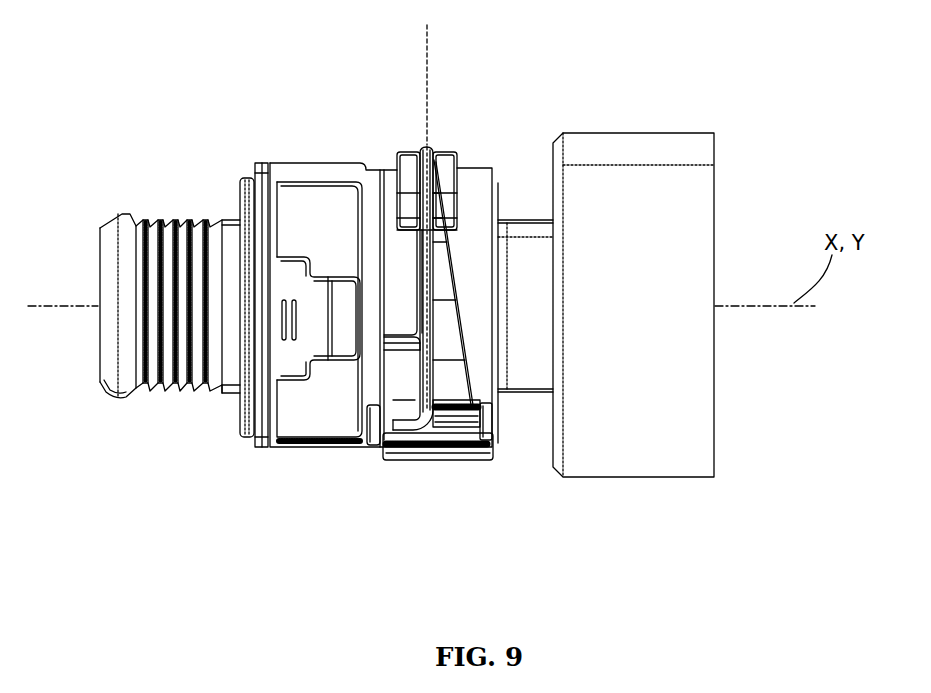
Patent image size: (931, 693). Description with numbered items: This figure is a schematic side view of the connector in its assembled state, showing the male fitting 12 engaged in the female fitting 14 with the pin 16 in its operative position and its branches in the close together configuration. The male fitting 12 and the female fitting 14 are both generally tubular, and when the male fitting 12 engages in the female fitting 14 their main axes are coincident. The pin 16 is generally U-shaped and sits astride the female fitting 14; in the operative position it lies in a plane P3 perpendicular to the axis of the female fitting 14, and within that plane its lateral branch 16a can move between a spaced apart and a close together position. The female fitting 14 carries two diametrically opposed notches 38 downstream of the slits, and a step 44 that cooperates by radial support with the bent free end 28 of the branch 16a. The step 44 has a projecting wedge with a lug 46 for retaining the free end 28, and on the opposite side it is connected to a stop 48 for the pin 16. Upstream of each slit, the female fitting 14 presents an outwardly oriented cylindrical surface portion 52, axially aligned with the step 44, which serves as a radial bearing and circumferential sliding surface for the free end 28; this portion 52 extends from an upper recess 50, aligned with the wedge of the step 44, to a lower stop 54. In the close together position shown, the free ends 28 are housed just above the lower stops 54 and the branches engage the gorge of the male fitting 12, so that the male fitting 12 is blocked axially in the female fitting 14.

The male fitting 12 is at (687, 184).
The female fitting 14 is at (287, 152).
The pin 16 is at (437, 133).
The lateral branch 16a is at (430, 307).
The free end 28 is at (401, 425).
The notch 38 is at (442, 320).
The step 44 is at (448, 383).
The lug 46 is at (498, 221).
The stop 48 is at (488, 450).
The upper recess 50 is at (393, 360).
The cylindrical surface portion 52 is at (397, 407).
The lower stop 54 is at (396, 442).
The plane P3 is at (430, 62).